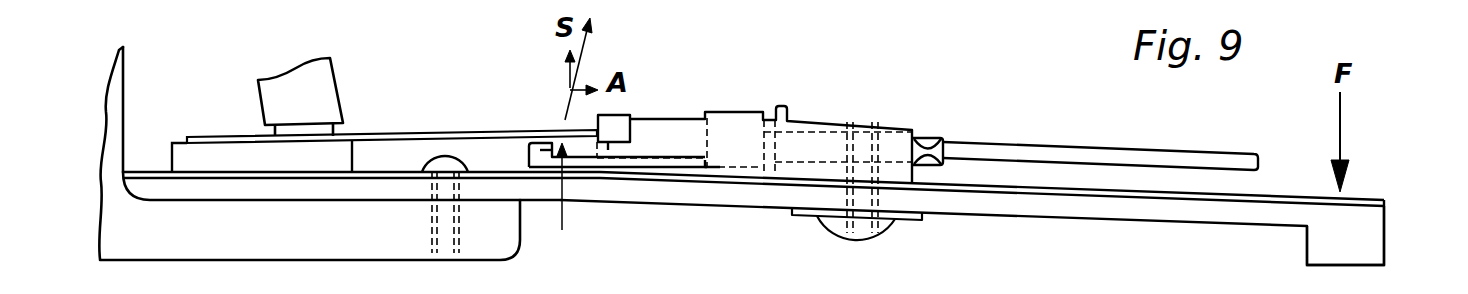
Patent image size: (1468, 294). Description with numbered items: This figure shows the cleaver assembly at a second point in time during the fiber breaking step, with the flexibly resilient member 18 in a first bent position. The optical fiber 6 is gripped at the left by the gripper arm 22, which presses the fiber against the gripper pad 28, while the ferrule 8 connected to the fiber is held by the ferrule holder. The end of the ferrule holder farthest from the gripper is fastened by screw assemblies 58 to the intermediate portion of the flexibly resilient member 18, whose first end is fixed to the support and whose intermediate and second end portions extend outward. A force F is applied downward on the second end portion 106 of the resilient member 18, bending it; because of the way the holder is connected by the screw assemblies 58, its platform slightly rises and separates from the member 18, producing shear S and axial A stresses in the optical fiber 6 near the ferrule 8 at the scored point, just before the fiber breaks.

The optical fiber 6 is at (425, 137).
The ferrule 8 is at (617, 115).
The flexibly resilient member 18 is at (1089, 227).
The gripper arm 22 is at (337, 88).
The gripper pad 28 is at (172, 157).
The screw assemblies 58 is at (878, 234).
The second end portion 106 is at (1379, 242).